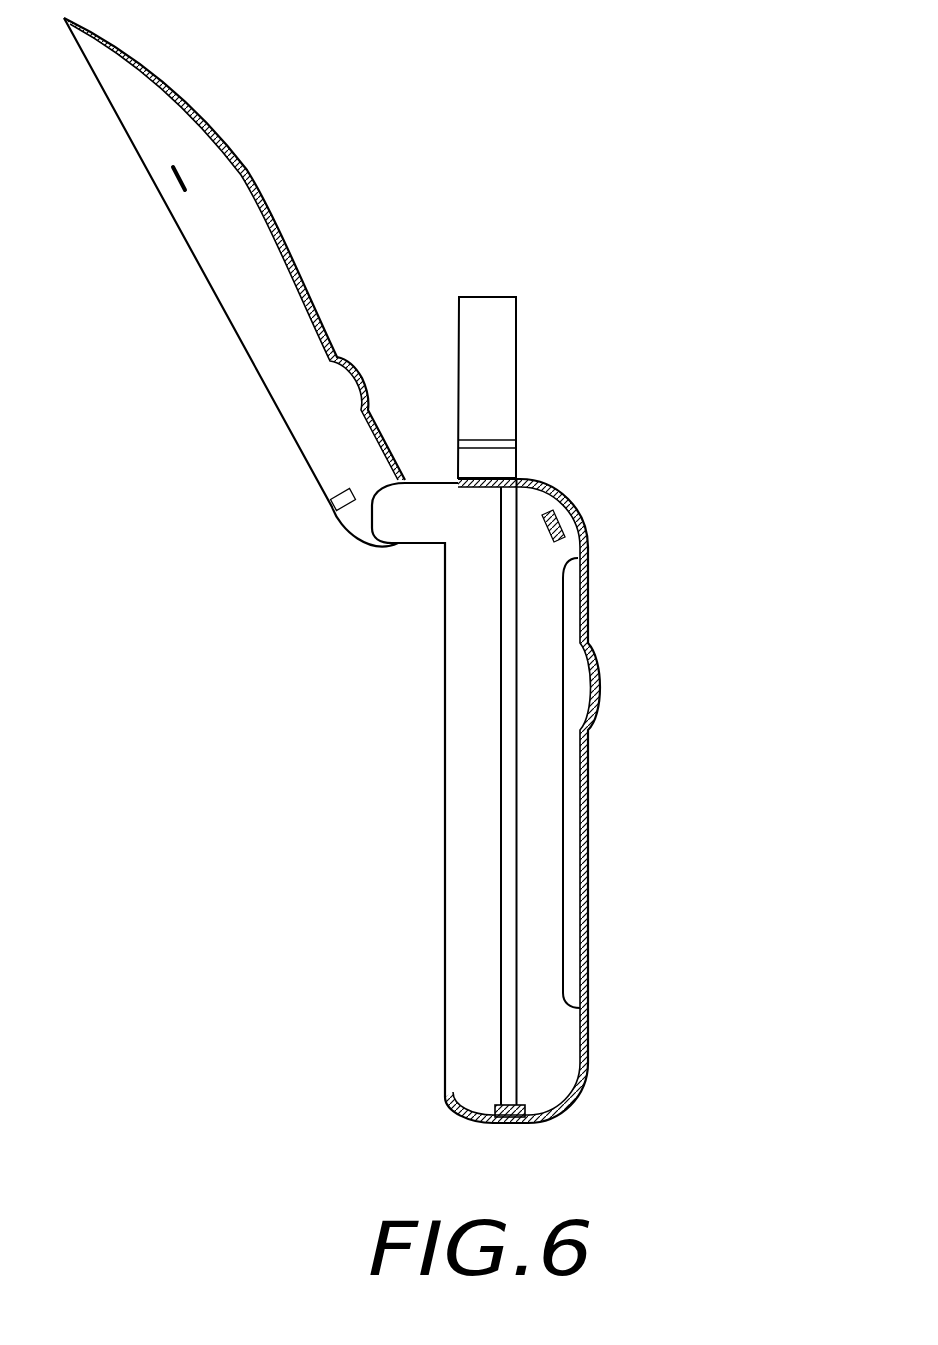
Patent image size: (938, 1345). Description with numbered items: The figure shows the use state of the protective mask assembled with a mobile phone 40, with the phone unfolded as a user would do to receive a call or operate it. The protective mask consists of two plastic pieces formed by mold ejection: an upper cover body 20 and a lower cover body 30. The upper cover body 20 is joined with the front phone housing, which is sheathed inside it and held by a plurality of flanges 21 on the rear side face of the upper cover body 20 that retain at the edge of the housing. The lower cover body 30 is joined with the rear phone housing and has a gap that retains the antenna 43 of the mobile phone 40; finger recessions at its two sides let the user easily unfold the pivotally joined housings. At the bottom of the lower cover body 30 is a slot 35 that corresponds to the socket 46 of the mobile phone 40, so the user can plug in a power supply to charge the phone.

The upper cover body 20 is at (295, 263).
The flanges 21 is at (186, 174).
The lower cover body 30 is at (590, 608).
The slot 35 is at (507, 1120).
The mobile phone 40 is at (445, 687).
The antenna 43 is at (514, 377).
The socket 46 is at (500, 1107).